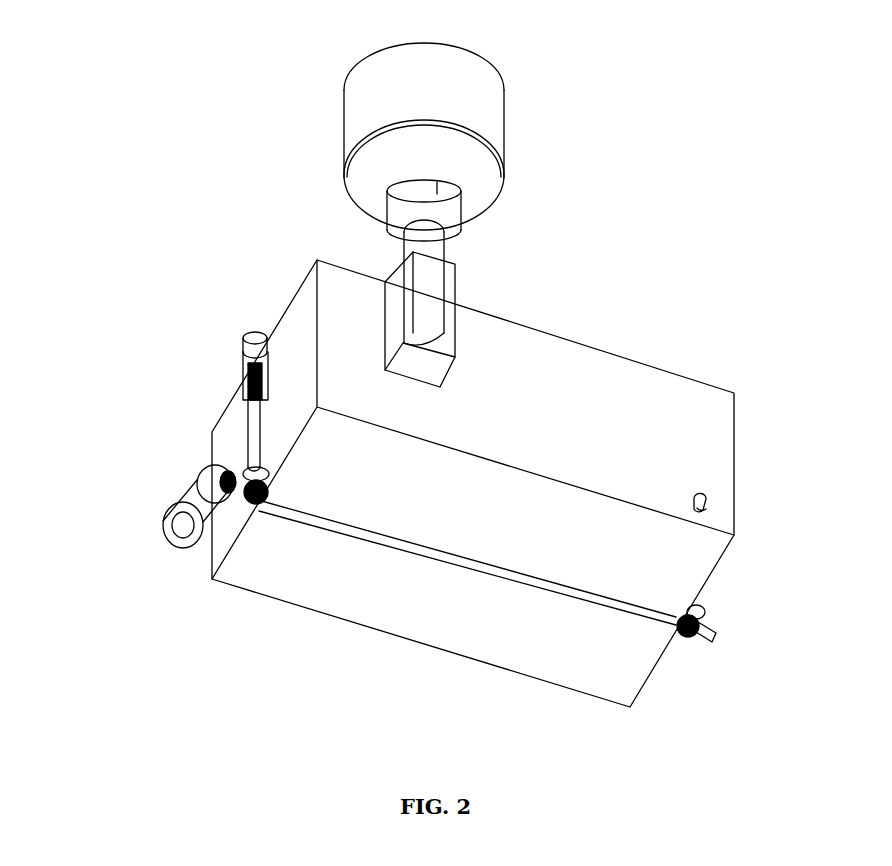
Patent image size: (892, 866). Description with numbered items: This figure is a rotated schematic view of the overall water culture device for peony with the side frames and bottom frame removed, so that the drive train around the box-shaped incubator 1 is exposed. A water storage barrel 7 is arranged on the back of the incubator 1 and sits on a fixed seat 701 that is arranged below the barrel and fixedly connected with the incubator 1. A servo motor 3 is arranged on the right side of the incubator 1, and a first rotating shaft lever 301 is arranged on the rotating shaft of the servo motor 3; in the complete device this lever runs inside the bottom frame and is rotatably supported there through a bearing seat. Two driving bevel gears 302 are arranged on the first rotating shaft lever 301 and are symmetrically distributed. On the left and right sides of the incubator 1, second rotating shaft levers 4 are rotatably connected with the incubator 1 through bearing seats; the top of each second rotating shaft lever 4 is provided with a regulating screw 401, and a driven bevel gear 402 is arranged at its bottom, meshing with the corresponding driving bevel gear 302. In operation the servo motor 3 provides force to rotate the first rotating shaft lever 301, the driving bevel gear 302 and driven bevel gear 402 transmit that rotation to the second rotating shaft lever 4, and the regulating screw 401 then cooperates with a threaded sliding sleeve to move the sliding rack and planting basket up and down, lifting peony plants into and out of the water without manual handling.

The incubator 1 is at (707, 437).
The water storage barrel 7 is at (358, 135).
The fixed seat 701 is at (447, 300).
The second rotating shaft lever 4 is at (252, 422).
The regulating screw 401 is at (250, 368).
The driven bevel gear 402 is at (238, 491).
The servo motor 3 is at (192, 522).
The first rotating shaft lever 301 is at (350, 530).
The driving bevel gear 302 is at (678, 643).